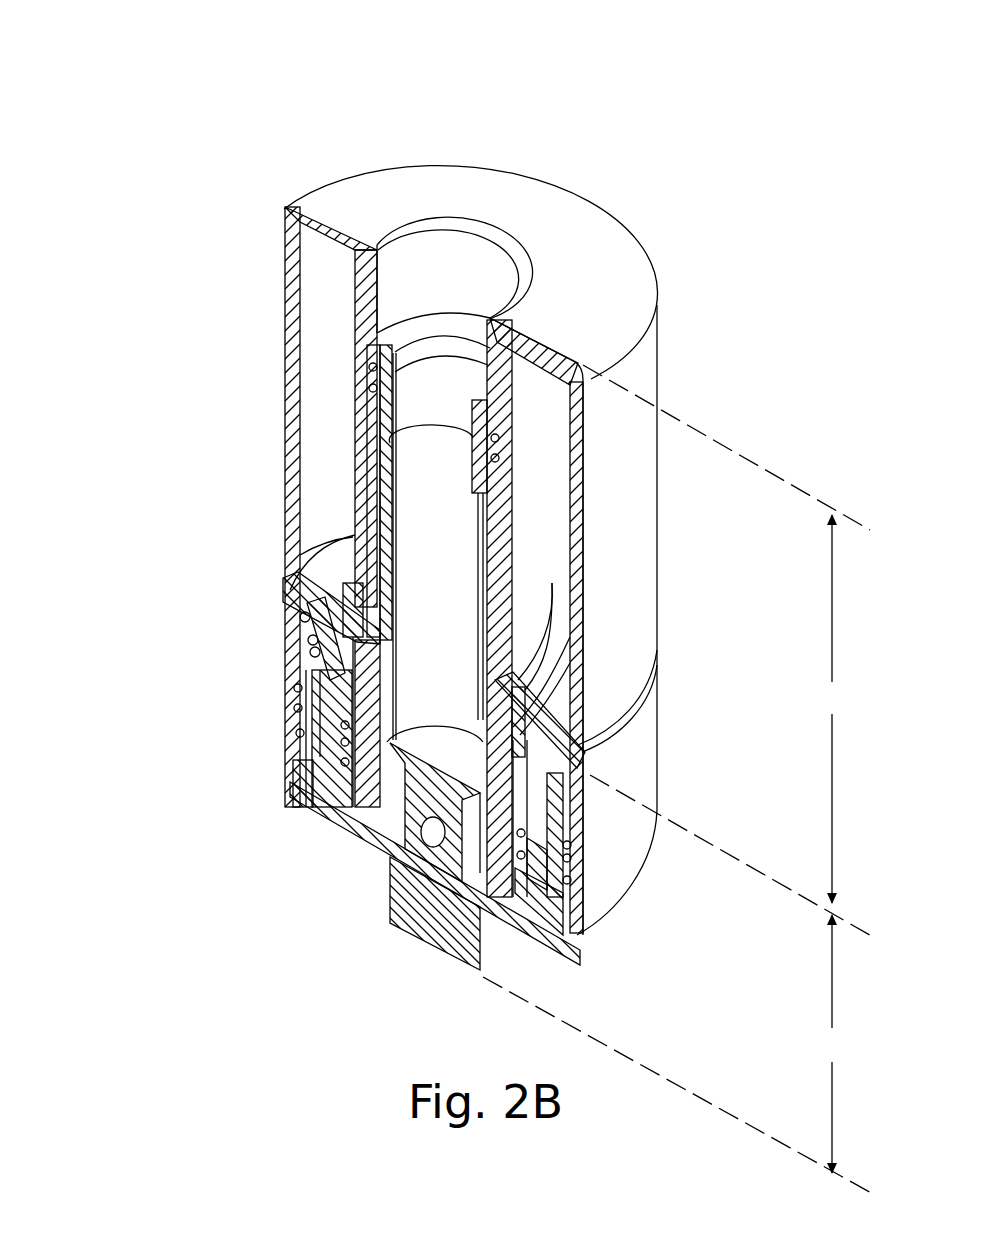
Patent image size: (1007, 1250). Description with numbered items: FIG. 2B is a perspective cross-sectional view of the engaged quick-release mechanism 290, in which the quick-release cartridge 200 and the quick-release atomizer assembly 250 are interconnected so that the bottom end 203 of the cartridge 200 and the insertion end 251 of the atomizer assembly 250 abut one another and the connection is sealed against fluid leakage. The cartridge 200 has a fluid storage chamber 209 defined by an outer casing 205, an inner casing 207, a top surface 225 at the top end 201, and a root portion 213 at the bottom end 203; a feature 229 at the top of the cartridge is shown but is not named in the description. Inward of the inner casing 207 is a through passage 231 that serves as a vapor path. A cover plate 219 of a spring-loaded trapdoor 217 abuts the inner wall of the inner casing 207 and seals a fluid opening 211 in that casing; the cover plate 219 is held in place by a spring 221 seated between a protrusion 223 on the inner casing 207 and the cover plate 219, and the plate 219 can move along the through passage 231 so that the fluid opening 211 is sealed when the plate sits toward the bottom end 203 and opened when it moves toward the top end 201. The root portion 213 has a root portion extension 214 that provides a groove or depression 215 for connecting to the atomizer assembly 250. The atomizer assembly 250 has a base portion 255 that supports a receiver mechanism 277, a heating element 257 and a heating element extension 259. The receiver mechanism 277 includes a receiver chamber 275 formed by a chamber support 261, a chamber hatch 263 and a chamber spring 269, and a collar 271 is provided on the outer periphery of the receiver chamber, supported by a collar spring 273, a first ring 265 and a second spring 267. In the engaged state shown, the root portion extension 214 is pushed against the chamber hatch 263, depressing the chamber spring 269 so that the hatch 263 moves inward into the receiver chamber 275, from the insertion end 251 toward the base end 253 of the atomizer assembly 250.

The engaged quick-release mechanism 290 is at (247, 132).
The outer casing 205 is at (645, 362).
The top surface 225 is at (603, 217).
The bore opening 229 is at (434, 331).
The fluid storage chamber 209 is at (556, 455).
The inner casing 207 is at (535, 528).
The protrusion 223 is at (372, 455).
The spring-loaded trapdoor 217 is at (372, 494).
The spring 221 is at (366, 381).
The cover plate 219 is at (378, 531).
The heating element extension 259 is at (432, 462).
The through passage 231 is at (455, 599).
The fluid opening 211 is at (487, 690).
The second spring 267 is at (308, 622).
The first ring 265 is at (318, 651).
The chamber hatch 263 is at (320, 712).
The chamber spring 269 is at (305, 752).
The receiver mechanism 277 is at (130, 718).
The heating element 257 is at (420, 802).
The base portion 255 is at (423, 913).
The receiver chamber 275 is at (577, 932).
The chamber support 261 is at (543, 907).
The groove or depression 215 is at (565, 768).
The root portion 213 is at (560, 738).
The root portion extension 214 is at (520, 800).
The collar 271 is at (570, 832).
The collar spring 273 is at (577, 880).
The top end 201 is at (834, 541).
The quick-release cartridge 200 is at (852, 711).
The bottom end 203 is at (837, 881).
The insertion end 251 is at (837, 942).
The quick-release atomizer assembly 250 is at (855, 1057).
The base end 253 is at (837, 1149).